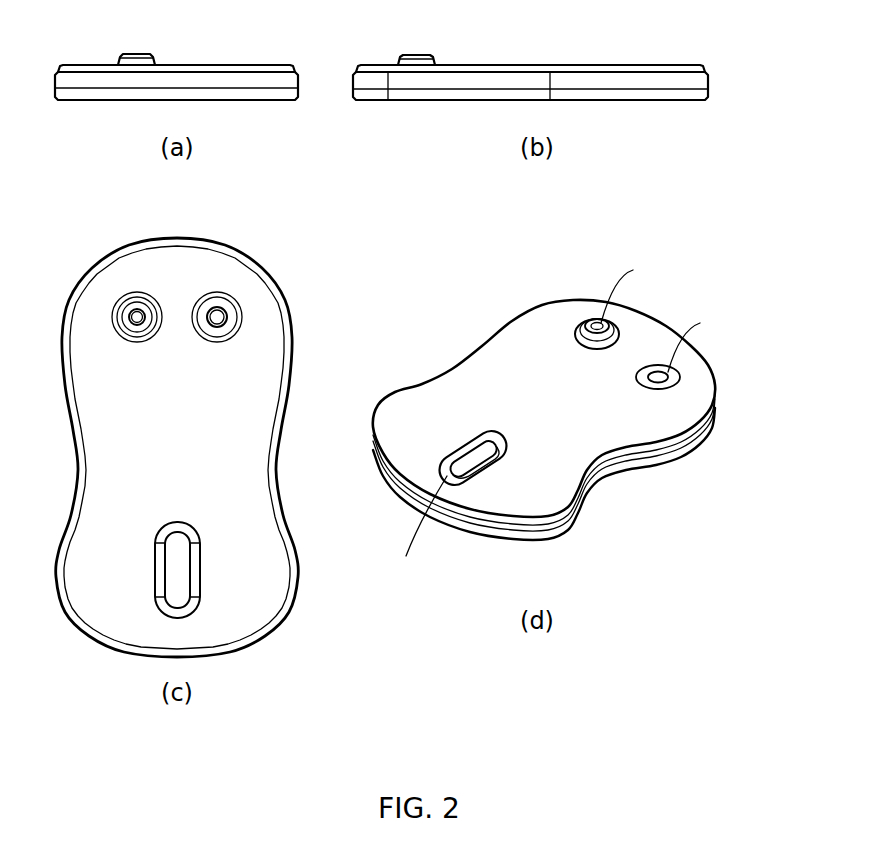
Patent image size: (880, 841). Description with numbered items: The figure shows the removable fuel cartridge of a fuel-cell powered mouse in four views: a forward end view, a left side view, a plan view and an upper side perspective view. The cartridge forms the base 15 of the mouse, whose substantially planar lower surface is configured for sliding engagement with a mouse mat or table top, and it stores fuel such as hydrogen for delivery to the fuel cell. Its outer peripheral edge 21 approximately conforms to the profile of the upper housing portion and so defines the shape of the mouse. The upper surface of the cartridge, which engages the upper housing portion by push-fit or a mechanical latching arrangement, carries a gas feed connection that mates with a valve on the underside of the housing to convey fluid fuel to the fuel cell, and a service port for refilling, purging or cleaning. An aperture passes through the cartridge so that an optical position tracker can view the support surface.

The base 15 is at (578, 100).
The outer peripheral edge 21 is at (284, 340).